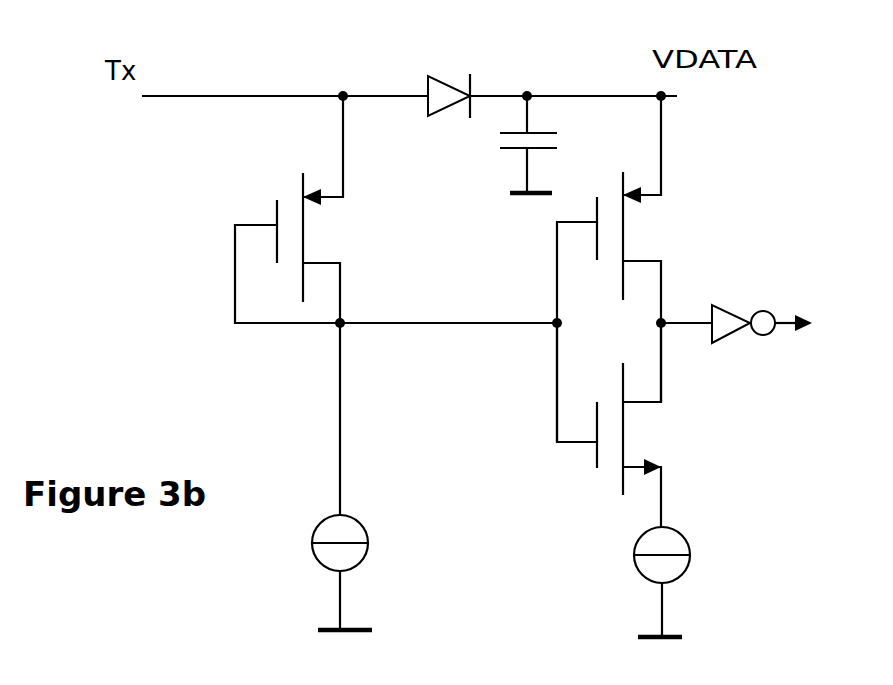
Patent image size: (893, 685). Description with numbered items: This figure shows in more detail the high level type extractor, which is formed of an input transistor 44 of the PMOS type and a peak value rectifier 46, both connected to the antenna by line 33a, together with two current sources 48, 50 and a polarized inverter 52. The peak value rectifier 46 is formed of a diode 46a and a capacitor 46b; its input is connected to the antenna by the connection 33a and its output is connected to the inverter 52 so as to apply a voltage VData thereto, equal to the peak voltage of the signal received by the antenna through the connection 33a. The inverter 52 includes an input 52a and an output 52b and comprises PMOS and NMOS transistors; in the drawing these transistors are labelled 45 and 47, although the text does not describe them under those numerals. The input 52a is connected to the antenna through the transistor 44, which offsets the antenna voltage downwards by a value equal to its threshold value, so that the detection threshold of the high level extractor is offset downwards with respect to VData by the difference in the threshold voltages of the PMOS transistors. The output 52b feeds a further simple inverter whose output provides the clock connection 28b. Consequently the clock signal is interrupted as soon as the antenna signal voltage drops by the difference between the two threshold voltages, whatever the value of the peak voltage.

The line 33a is at (222, 96).
The diode 46a is at (438, 90).
The peak value rectifier 46 is at (518, 75).
The capacitor 46b is at (553, 146).
The input transistor 44 is at (305, 235).
The PMOS transistor 45 is at (640, 231).
The NMOS transistor 47 is at (635, 428).
The input 52a is at (553, 288).
The output 52b is at (663, 298).
The inverter 52 is at (680, 375).
The clock connection 28b is at (792, 318).
The current source 48 is at (350, 532).
The current source 50 is at (673, 540).